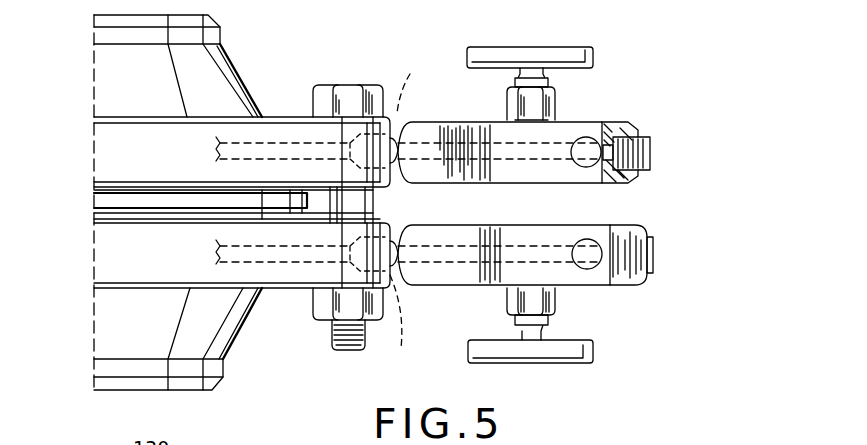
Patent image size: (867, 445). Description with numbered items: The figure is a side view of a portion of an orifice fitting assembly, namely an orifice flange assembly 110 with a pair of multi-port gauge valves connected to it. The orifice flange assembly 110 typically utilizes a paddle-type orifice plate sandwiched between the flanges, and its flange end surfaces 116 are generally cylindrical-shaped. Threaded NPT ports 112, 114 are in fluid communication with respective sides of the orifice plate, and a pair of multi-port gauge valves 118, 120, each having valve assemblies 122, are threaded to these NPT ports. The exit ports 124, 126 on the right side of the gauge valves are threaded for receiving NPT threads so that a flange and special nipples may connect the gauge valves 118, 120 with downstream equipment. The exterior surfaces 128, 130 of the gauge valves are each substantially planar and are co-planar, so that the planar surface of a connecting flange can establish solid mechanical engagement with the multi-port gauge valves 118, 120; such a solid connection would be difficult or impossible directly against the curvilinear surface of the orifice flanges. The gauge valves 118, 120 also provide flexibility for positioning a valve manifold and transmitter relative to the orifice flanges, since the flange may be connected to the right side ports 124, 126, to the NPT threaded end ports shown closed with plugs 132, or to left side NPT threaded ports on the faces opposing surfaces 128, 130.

The orifice flange assembly 110 is at (222, 80).
The threaded NPT port 112 is at (406, 82).
The threaded NPT port 114 is at (403, 322).
The flange end surfaces 116 is at (397, 178).
The multi-port gauge valve 118 is at (580, 125).
The multi-port gauge valve 120 is at (598, 288).
The valve assembly 122 is at (565, 352).
The exit port 124 is at (587, 152).
The exit port 126 is at (587, 254).
The exterior surface 128 is at (497, 157).
The exterior surface 130 is at (467, 253).
The plug 132 is at (641, 156).